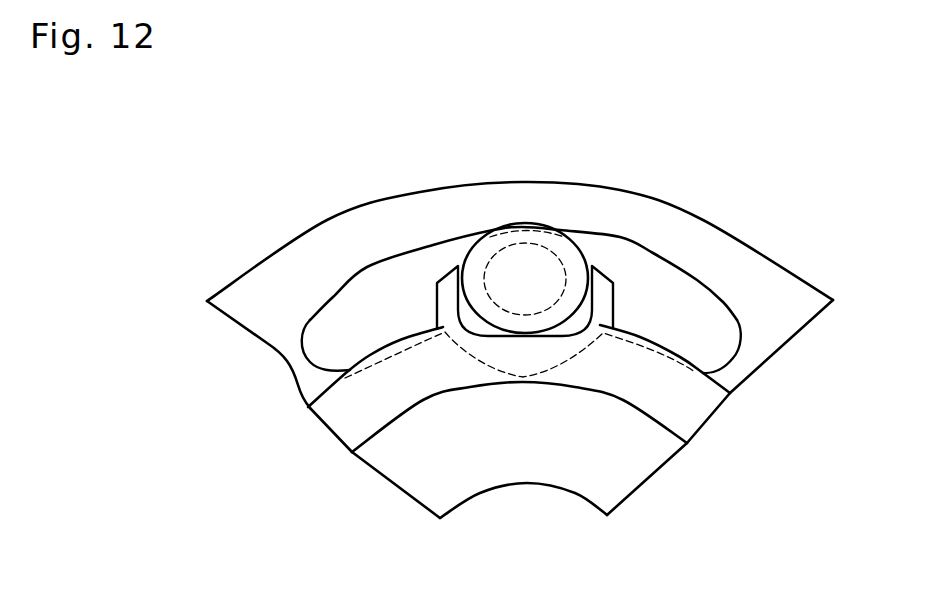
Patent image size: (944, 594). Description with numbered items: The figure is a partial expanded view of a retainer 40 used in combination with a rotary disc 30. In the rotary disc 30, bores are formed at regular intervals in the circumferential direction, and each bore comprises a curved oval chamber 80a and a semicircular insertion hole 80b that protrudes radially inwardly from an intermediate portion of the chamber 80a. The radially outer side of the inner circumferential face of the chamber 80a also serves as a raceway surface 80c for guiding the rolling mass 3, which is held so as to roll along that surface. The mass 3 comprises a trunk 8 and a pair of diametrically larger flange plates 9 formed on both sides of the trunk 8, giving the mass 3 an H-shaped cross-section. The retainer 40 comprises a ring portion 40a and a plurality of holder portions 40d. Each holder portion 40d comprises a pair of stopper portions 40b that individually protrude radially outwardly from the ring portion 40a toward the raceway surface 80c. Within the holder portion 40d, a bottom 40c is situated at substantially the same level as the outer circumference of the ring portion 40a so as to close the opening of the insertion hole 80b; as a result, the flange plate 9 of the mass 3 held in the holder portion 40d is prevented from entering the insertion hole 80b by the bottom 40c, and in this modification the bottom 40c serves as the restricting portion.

The mass 3 is at (525, 226).
The trunk 8 is at (500, 247).
The flange plate 9 is at (575, 255).
The rotary disc 30 is at (737, 238).
The retainer 40 is at (702, 417).
The ring portion 40a is at (353, 456).
The stopper portion 40b is at (440, 268).
The bottom 40c is at (526, 335).
The holder portion 40d is at (591, 253).
The chamber 80a is at (710, 308).
The insertion hole 80b is at (550, 365).
The raceway surface 80c is at (339, 288).